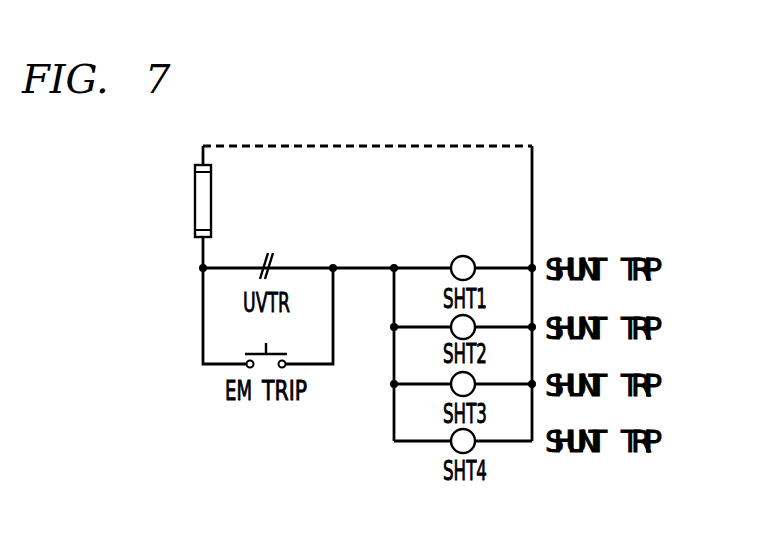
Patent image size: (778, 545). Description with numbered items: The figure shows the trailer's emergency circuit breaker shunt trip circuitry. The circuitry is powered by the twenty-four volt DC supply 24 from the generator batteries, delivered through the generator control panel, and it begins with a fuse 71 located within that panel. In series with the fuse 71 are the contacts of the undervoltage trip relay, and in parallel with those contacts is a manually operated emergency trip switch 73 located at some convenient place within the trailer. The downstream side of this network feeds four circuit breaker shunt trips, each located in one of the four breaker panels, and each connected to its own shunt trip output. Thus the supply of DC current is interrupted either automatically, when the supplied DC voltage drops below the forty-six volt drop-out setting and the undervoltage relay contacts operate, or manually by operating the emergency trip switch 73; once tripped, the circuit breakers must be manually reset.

The 24 VDC supply line 24 is at (367, 277).
The fuse 71 is at (211, 206).
The emergency trip switch 73 is at (279, 351).